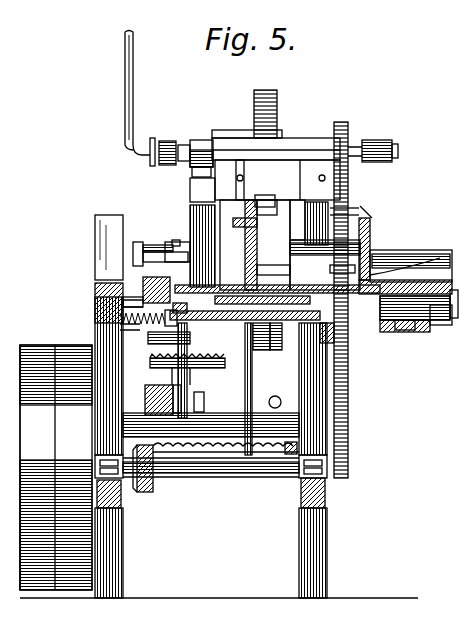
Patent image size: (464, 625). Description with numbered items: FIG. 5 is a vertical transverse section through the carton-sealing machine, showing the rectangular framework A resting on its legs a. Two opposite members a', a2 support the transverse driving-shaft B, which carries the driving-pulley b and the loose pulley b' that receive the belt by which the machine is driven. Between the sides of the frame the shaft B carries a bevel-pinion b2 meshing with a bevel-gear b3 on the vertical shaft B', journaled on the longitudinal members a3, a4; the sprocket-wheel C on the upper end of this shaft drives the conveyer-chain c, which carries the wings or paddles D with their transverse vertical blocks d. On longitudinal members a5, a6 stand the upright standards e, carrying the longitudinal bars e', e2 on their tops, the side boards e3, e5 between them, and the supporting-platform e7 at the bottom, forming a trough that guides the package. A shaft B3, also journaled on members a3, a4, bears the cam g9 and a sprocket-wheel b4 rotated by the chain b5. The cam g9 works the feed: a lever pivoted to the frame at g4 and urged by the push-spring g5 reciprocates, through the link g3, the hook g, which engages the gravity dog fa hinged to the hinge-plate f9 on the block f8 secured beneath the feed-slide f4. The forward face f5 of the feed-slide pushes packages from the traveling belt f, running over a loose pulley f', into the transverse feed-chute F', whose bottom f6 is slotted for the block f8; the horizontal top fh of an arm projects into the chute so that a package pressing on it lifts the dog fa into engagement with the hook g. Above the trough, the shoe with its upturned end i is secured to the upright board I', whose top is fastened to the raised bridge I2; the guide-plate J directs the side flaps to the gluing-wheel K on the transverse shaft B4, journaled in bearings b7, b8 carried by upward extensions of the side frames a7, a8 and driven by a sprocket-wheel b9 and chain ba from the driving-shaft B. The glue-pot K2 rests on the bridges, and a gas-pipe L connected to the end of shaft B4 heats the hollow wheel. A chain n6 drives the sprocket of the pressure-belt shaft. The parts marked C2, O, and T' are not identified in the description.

The legs a is at (224, 447).
The frame member a' is at (124, 499).
The frame member a2 is at (328, 500).
The longitudinal frame member a3 is at (143, 283).
The longitudinal frame member a4 is at (154, 400).
The longitudinal frame member a5 is at (262, 350).
The longitudinal frame member a6 is at (280, 350).
The side frame a7 is at (198, 186).
The side frame a8 is at (385, 180).
The framework A is at (95, 303).
The driving-pulley b is at (56, 467).
The loose pulley b' is at (32, 467).
The bevel-pinion b2 is at (150, 488).
The bevel-gear b3 is at (246, 478).
The sprocket-wheel b4 is at (205, 395).
The chain b5 is at (205, 450).
The bearing b7 is at (338, 125).
The bearing b8 is at (196, 140).
The sprocket-wheel b9 is at (350, 130).
The chain ba is at (340, 180).
The driving-shaft B is at (211, 483).
The vertical shaft B' is at (211, 402).
The cam shaft B3 is at (160, 375).
The transverse shaft B4 is at (372, 140).
The conveyer-chain c is at (140, 242).
The sprocket-wheel C is at (160, 352).
The clamp C2 is at (170, 242).
The transverse vertical block d is at (112, 240).
The wings or paddles D is at (255, 245).
The upright standards e is at (205, 294).
The longitudinal bar e' is at (327, 219).
The longitudinal bar e2 is at (190, 210).
The lateral guide e3 is at (268, 221).
The lateral guide e5 is at (273, 272).
The supporting-platform e7 is at (325, 265).
The traveling belt f is at (405, 314).
The loose pulley f' is at (402, 344).
The feed-slide f4 is at (411, 259).
The forward face f5 is at (377, 206).
The chute bottom f6 is at (450, 260).
The block f8 is at (450, 318).
The hinge-plate f9 is at (410, 330).
The gravity dog fa is at (420, 320).
The arm top fh is at (370, 265).
The feed-chute F' is at (383, 248).
The hook g is at (395, 330).
The link g3 is at (350, 340).
The pivot g4 is at (108, 335).
The push-spring g5 is at (100, 297).
The cam g9 is at (190, 340).
The upturned end i is at (241, 217).
The upright board I' is at (276, 169).
The raised bridge I2 is at (330, 200).
The guide-plate J is at (300, 195).
The gluing-wheel K is at (278, 100).
The glue-pot K2 is at (262, 195).
The gas-pipe L is at (134, 95).
The chain n6 is at (205, 140).
The oil hole O is at (275, 402).
The tool holder T' is at (234, 148).